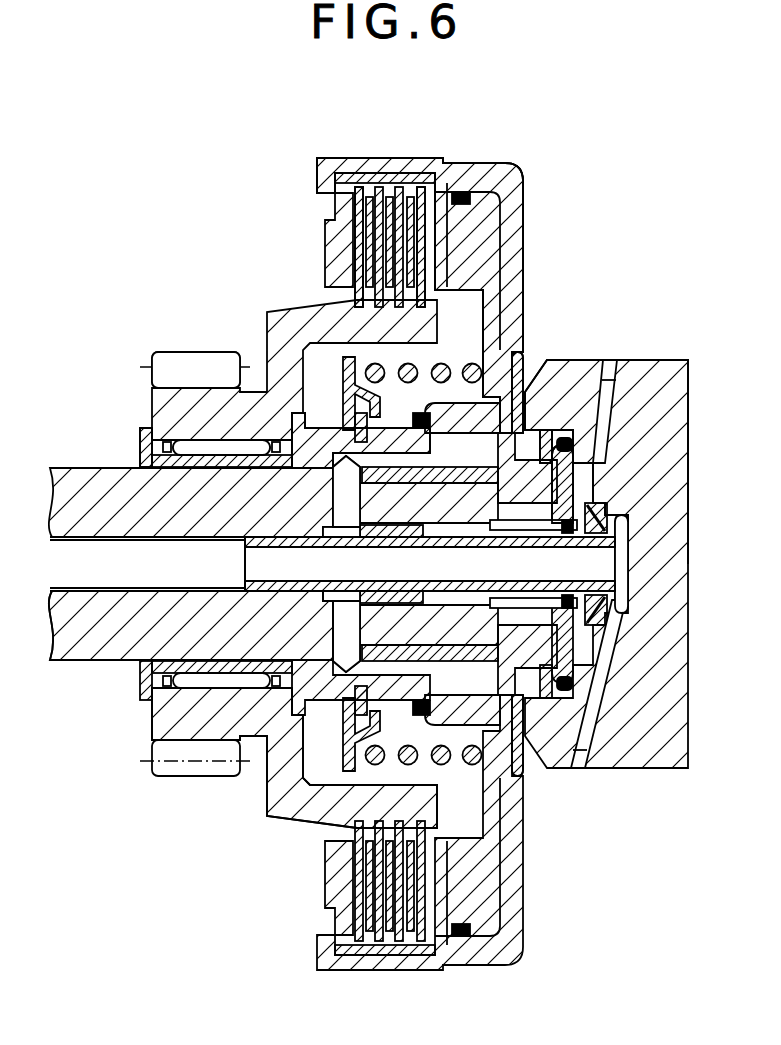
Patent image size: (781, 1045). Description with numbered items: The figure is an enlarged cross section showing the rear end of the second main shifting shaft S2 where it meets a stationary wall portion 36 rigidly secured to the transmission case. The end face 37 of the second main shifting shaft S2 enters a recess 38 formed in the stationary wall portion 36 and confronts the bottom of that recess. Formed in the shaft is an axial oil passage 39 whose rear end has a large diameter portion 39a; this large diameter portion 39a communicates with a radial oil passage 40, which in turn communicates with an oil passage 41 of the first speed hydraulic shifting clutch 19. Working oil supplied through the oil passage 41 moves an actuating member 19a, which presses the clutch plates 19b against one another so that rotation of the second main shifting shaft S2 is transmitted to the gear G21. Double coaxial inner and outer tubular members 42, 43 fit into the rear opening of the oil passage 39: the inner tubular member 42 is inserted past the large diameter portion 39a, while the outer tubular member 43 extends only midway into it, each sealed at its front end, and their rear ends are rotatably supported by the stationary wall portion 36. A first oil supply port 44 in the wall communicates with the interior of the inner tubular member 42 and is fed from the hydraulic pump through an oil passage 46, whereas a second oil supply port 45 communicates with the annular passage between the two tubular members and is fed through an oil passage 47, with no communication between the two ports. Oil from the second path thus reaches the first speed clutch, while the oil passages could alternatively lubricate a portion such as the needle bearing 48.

The first speed hydraulic shifting clutch 19 is at (537, 174).
The actuating member 19a is at (492, 240).
The clutch plates 19b is at (372, 196).
The gear G21 is at (192, 362).
The needle bearing 48 is at (198, 444).
The oil passage 40 is at (330, 494).
The oil passage 41 is at (514, 392).
The stationary wall portion 36 is at (583, 373).
The oil passage 47 is at (610, 412).
The end face 37 is at (590, 492).
The second oil supply port 45 is at (580, 502).
The first oil supply port 44 is at (626, 570).
The inner tubular member 42 is at (343, 547).
The outer tubular member 43 is at (456, 537).
The oil passage 39 is at (158, 575).
The second main shifting shaft S2 is at (85, 655).
The large diameter portion 39a is at (333, 645).
The recess 38 is at (523, 688).
The oil passage 46 is at (598, 714).